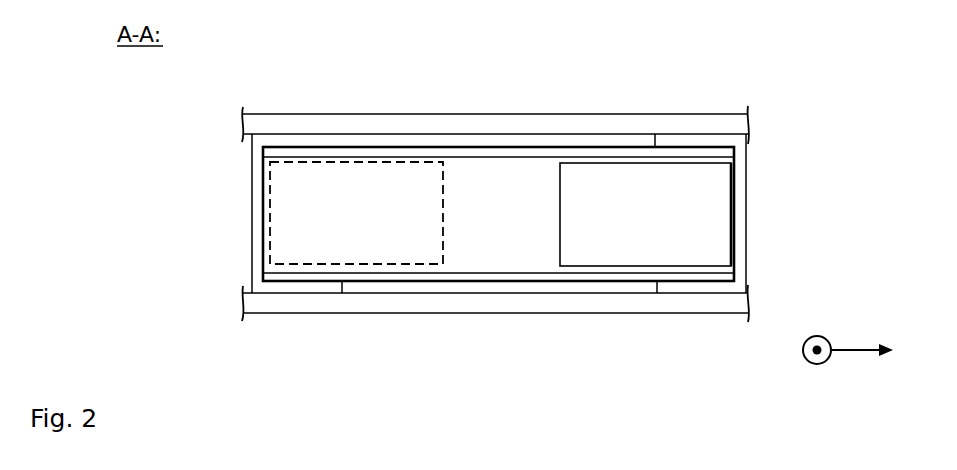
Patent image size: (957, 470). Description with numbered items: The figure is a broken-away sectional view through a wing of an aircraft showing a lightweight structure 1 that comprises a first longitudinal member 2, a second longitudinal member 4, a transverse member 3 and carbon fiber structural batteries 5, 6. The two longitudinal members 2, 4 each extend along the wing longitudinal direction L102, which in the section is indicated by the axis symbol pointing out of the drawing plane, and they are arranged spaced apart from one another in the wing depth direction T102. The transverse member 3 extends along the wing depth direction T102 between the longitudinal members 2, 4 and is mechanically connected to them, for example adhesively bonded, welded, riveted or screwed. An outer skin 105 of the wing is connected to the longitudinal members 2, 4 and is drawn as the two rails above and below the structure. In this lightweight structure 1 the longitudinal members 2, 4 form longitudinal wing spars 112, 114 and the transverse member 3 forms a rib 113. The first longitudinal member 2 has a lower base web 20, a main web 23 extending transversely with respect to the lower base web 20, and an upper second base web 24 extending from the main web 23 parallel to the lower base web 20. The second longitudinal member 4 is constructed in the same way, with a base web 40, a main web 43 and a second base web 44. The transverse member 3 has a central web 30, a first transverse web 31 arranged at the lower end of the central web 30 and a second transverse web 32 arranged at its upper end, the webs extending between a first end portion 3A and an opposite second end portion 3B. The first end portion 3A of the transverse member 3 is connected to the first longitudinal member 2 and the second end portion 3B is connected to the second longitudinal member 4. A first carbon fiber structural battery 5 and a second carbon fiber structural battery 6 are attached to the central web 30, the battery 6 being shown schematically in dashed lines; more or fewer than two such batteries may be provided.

The lightweight structure 1 is at (188, 192).
The first longitudinal member 2 is at (797, 213).
The longitudinal wing spar 112 is at (741, 204).
The transverse member 3 is at (498, 161).
The rib 113 is at (510, 148).
The first end portion 3A is at (691, 138).
The second end portion 3B is at (292, 135).
The second longitudinal member 4 is at (205, 254).
The longitudinal wing spar 114 is at (253, 242).
The first carbon fiber structural battery 5 is at (607, 177).
The second carbon fiber structural battery 6 is at (347, 185).
The first base web 20 is at (693, 287).
The main web 23 is at (741, 236).
The second base web 24 is at (663, 140).
The central web 30 is at (490, 235).
The first transverse web 31 is at (410, 281).
The second transverse web 32 is at (414, 150).
The base web 40 is at (283, 293).
The main web 43 is at (252, 212).
The second base web 44 is at (274, 140).
The outer skin 105 is at (457, 117).
The wing depth direction T102 is at (853, 346).
The wing longitudinal direction L102 is at (814, 365).